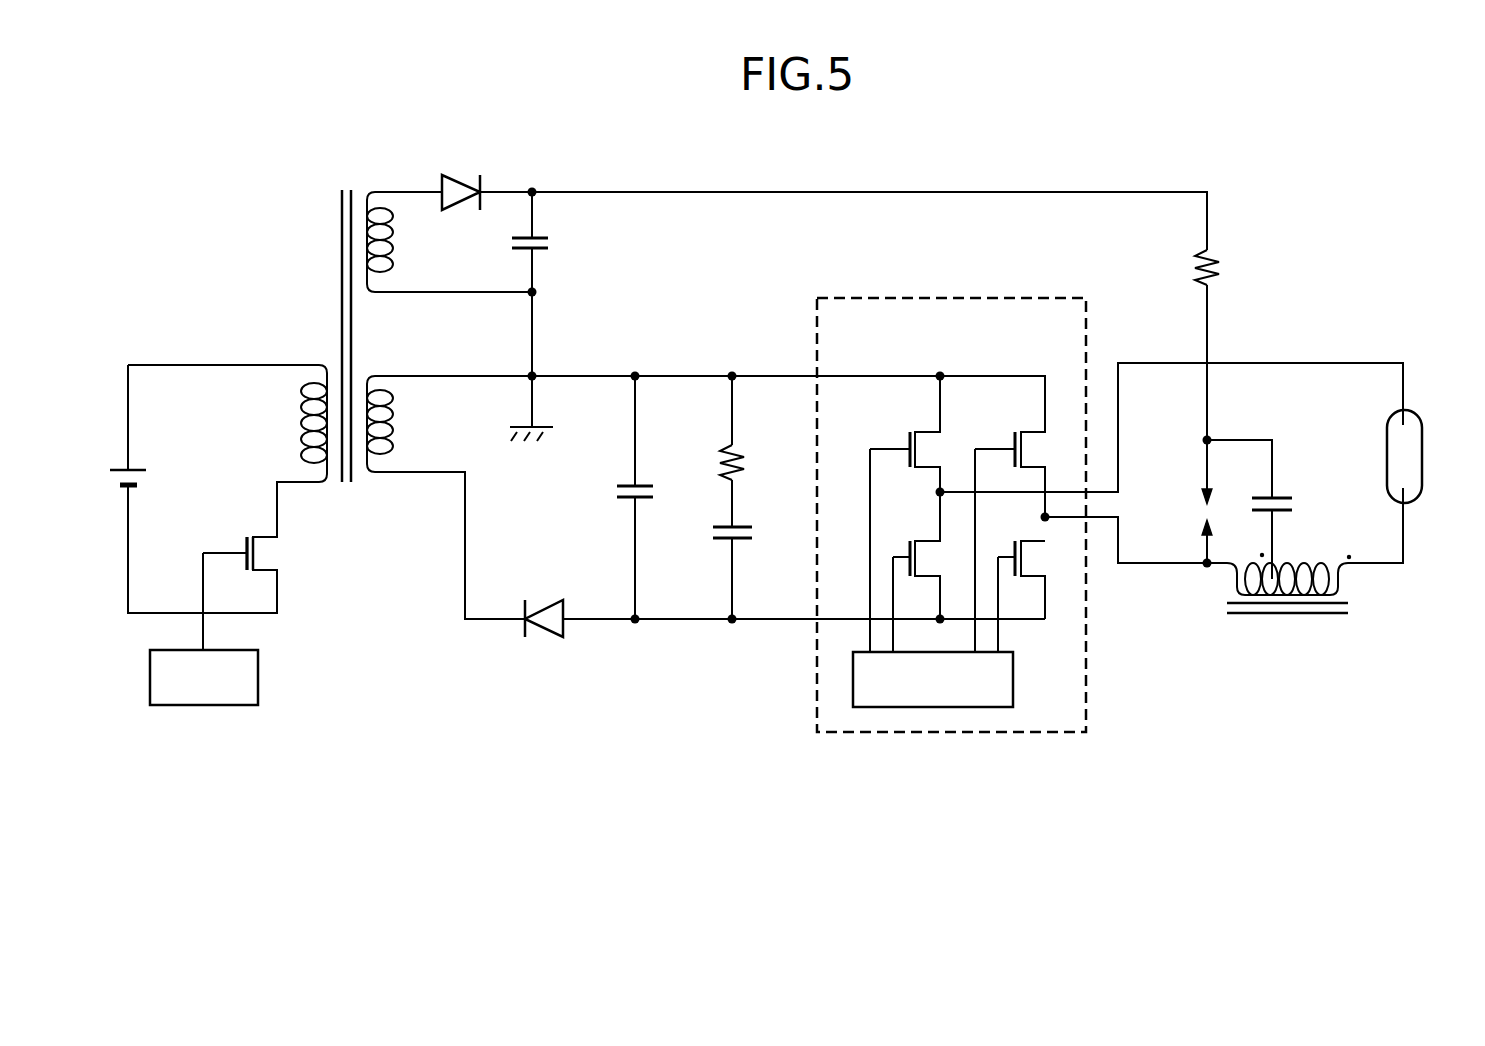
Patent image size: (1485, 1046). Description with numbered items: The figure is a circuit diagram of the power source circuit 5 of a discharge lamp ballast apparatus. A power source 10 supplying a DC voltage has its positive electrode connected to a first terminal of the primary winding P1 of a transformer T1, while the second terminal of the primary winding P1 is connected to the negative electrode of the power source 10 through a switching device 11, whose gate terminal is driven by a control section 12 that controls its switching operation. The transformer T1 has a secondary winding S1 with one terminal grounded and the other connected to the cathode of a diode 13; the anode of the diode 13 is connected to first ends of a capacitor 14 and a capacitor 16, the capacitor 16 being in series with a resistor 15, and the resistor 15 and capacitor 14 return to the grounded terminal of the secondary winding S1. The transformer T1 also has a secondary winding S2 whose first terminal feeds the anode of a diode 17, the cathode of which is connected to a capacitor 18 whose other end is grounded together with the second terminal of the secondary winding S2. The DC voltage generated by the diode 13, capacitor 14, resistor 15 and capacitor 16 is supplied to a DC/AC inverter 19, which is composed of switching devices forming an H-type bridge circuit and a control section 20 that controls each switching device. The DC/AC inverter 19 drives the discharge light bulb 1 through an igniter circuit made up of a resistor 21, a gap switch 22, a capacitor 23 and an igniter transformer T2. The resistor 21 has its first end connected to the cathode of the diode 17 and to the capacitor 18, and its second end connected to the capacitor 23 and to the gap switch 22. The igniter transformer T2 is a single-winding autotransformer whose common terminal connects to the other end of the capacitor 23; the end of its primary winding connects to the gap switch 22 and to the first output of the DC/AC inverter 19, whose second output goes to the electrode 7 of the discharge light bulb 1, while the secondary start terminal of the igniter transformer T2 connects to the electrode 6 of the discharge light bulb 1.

The power source circuit 5 is at (200, 192).
The power source 10 is at (147, 482).
The switching device 11 is at (272, 552).
The control section 12 is at (257, 673).
The diode 13 is at (547, 598).
The capacitor 14 is at (651, 492).
The resistor 15 is at (743, 463).
The capacitor 16 is at (752, 533).
The diode 17 is at (460, 175).
The capacitor 18 is at (551, 242).
The DC/AC inverter 19 is at (988, 296).
The control section 20 is at (1017, 677).
The resistor 21 is at (1226, 268).
The gap switch 22 is at (1197, 510).
The capacitor 23 is at (1296, 503).
The discharge light bulb 1 is at (1424, 458).
The electrode 7 is at (1406, 425).
The electrode 6 is at (1406, 493).
The transformer T1 is at (330, 365).
The igniter transformer T2 is at (1355, 582).
The primary winding P1 is at (288, 427).
The secondary winding S1 is at (397, 427).
The secondary winding S2 is at (397, 257).